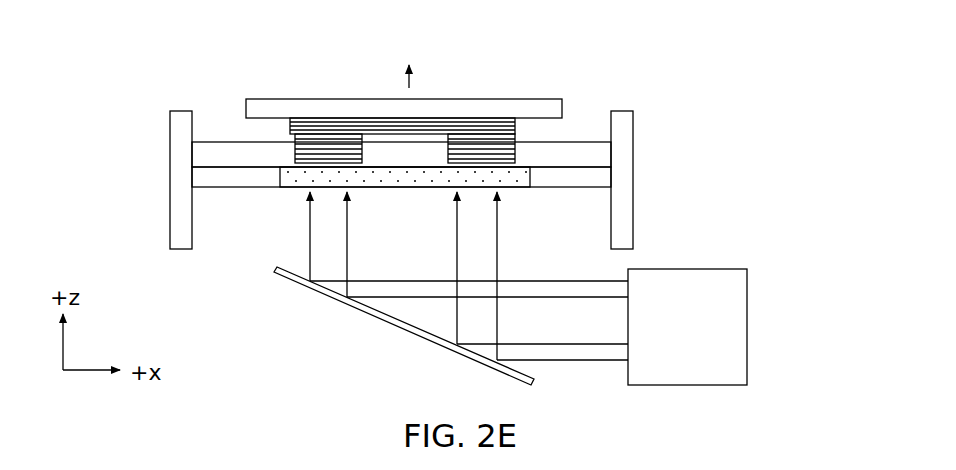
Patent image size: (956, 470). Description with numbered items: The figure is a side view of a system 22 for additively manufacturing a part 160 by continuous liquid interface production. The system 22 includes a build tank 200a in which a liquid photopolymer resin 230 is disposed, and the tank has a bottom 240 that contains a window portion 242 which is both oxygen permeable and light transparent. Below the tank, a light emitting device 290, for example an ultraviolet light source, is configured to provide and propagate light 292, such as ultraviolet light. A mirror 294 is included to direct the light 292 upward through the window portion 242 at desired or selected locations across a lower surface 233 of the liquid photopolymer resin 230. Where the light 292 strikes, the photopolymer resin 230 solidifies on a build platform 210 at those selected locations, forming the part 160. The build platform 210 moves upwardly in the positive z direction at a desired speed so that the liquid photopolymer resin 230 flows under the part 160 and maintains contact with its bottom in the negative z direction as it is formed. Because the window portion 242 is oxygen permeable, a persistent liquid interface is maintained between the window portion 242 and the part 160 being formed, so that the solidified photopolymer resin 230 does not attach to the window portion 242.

The system 22 is at (725, 63).
The build tank 200a is at (167, 158).
The liquid photopolymer resin 230 is at (203, 142).
The lower surface 233 is at (293, 142).
The build platform 210 is at (482, 98).
The part 160 is at (522, 133).
The window portion 242 is at (295, 178).
The bottom 240 is at (580, 190).
The light 292 is at (347, 242).
The mirror 294 is at (372, 318).
The light emitting device 290 is at (749, 312).